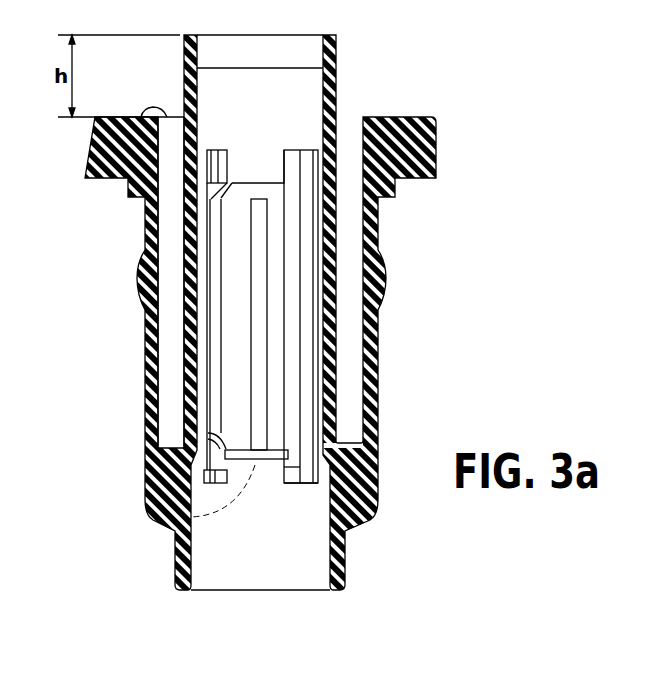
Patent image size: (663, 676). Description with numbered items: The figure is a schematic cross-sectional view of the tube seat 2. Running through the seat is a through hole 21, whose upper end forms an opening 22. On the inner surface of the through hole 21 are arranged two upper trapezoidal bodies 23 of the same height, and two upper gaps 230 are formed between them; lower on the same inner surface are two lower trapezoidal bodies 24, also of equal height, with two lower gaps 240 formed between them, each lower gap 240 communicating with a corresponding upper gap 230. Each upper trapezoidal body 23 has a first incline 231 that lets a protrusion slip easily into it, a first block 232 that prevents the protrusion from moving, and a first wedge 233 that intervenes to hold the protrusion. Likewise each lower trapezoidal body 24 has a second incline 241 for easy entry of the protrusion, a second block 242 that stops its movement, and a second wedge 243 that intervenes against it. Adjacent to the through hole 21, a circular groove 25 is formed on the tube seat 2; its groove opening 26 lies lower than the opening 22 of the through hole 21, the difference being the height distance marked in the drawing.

The tube seat 2 is at (413, 308).
The through hole 21 is at (257, 533).
The opening 22 is at (308, 37).
The upper trapezoidal body 23 is at (262, 180).
The lower trapezoidal body 24 is at (175, 517).
The circular groove 25 is at (172, 316).
The groove opening 26 is at (110, 133).
The upper gap 230 is at (145, 236).
The first incline 231 is at (205, 205).
The first block 232 is at (297, 163).
The first wedge 233 is at (205, 162).
The lower gap 240 is at (203, 431).
The second incline 241 is at (201, 460).
The second block 242 is at (297, 470).
The second wedge 243 is at (175, 473).